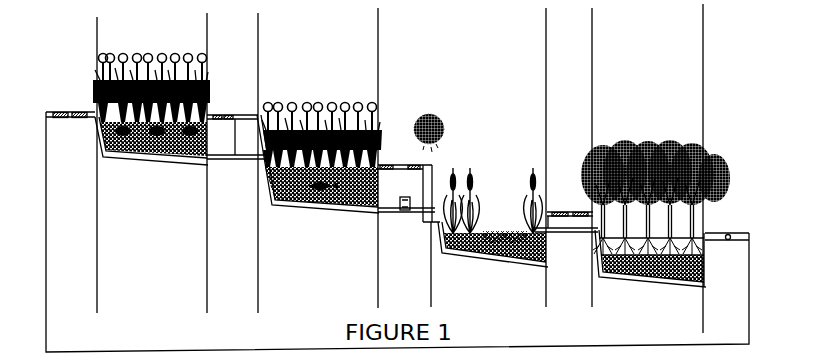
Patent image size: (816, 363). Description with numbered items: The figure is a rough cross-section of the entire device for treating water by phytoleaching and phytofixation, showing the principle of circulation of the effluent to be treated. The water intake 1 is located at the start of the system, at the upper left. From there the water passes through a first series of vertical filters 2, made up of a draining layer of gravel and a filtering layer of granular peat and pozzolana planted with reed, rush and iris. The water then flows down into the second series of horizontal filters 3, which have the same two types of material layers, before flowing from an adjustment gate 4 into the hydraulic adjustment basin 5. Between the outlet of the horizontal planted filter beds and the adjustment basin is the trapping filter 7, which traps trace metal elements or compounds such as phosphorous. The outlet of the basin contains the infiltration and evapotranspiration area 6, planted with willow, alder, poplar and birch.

The water inlet 1 is at (70, 112).
The first series of vertical filters 2 is at (158, 55).
The second series of horizontal filters 3 is at (280, 105).
The adjustment gate 4 is at (403, 197).
The hydraulic adjustment basin 5 is at (492, 232).
The infiltration and evapotranspiration area 6 is at (650, 143).
The trapping filter 7 is at (428, 113).